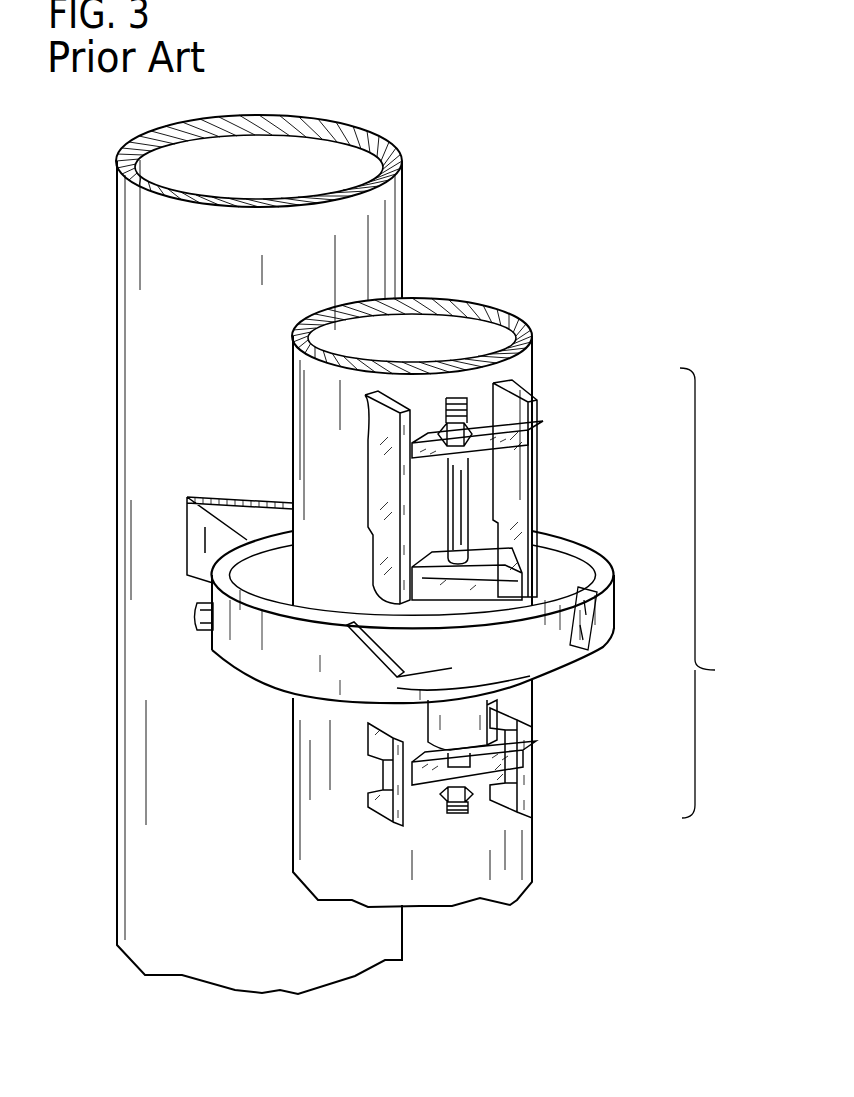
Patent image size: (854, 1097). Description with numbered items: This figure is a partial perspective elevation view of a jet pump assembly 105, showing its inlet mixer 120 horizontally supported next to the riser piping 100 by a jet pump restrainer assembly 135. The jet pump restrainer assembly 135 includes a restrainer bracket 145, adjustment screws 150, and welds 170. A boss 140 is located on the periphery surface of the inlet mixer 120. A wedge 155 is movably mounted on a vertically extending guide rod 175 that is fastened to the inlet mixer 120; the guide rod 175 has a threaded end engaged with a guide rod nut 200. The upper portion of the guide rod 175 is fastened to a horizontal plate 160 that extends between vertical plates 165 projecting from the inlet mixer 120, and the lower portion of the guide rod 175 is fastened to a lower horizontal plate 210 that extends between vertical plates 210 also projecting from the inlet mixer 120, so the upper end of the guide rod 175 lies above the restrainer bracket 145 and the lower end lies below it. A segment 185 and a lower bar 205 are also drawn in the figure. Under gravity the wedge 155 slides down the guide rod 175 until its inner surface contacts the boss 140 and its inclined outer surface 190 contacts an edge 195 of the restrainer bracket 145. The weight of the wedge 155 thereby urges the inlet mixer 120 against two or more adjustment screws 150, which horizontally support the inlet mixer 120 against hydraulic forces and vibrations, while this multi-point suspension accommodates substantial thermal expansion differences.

The riser piping 100 is at (116, 327).
The jet pump assembly 105 is at (531, 330).
The inlet mixer 120 is at (530, 840).
The jet pump restrainer assembly 135 is at (722, 593).
The boss 140 is at (304, 590).
The restrainer bracket 145 is at (244, 697).
The adjustment screws 150 is at (203, 605).
The wedge 155 is at (437, 563).
The horizontal plate 160 is at (527, 405).
The vertical plates 165 is at (376, 405).
The welds 170 is at (247, 497).
The guide rod 175 is at (462, 485).
The ring segment 185 is at (552, 637).
The outer surface 190 is at (480, 637).
The edge 195 is at (450, 640).
The guide rod nut 200 is at (436, 430).
The lower cross bar 205 is at (522, 745).
The horizontal plate 210 is at (522, 760).